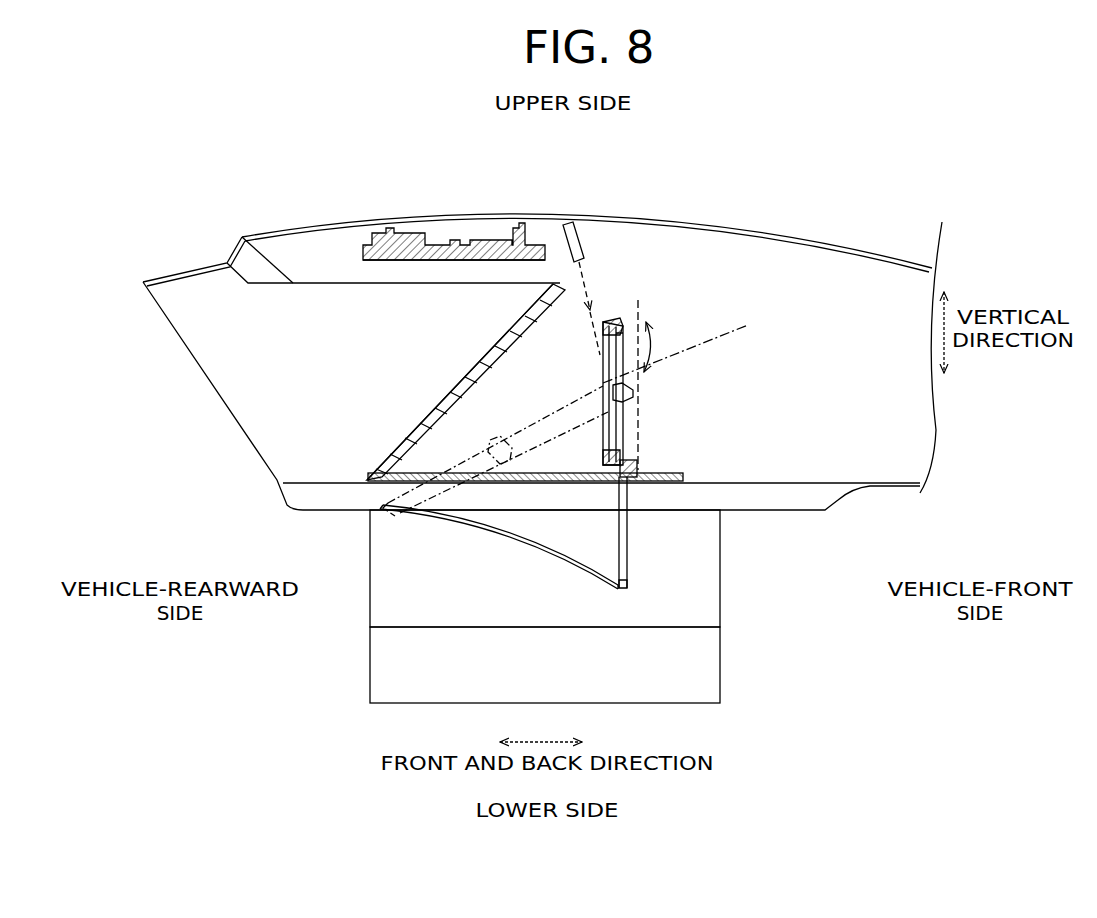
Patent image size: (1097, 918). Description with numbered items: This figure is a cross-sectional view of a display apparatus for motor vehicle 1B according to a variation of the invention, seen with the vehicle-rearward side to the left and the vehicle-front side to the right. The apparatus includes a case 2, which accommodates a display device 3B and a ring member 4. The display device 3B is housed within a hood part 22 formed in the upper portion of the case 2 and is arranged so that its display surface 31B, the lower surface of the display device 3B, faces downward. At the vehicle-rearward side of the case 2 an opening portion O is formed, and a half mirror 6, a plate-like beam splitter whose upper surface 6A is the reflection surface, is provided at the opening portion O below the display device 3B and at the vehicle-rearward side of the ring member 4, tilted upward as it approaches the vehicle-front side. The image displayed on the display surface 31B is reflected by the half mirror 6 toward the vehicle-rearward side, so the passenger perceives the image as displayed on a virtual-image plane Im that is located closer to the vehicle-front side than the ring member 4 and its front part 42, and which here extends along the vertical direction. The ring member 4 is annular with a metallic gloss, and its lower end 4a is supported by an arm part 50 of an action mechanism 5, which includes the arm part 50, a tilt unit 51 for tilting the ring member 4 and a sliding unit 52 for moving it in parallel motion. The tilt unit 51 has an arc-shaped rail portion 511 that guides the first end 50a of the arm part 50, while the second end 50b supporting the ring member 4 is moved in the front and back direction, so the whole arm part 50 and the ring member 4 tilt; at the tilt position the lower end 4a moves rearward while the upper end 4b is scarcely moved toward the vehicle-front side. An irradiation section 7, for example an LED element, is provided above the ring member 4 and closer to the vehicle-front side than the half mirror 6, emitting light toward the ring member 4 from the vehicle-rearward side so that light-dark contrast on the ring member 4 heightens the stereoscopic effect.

The display apparatus for motor vehicle 1B is at (660, 180).
The case 2 is at (480, 213).
The hood part 22 is at (296, 240).
The display device 3B is at (410, 242).
The display surface 31B is at (432, 262).
The irradiation section 7 is at (565, 222).
The ring member 4 is at (621, 322).
The lower end of ring member 4a is at (625, 455).
The upper end of ring member 4b is at (625, 330).
The front part 42 is at (600, 378).
The virtual-image plane Im is at (640, 412).
The half mirror 6 is at (448, 400).
The upper surface 6A is at (412, 428).
The opening portion O is at (214, 400).
The action mechanism 5 is at (596, 576).
The arm part 50 is at (618, 528).
The first end of arm part 50a is at (628, 582).
The second end of arm part 50b is at (640, 471).
The tilt unit 51 is at (705, 548).
The rail portion 511 is at (460, 558).
The sliding unit 52 is at (705, 675).